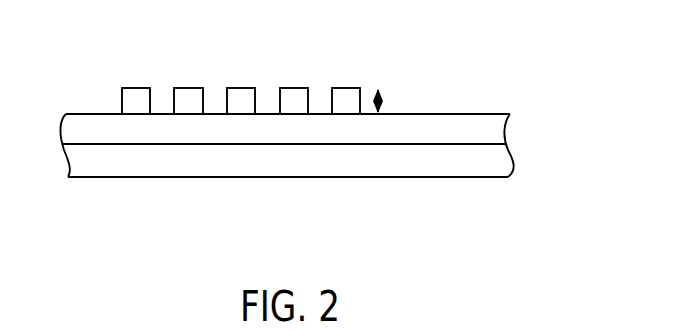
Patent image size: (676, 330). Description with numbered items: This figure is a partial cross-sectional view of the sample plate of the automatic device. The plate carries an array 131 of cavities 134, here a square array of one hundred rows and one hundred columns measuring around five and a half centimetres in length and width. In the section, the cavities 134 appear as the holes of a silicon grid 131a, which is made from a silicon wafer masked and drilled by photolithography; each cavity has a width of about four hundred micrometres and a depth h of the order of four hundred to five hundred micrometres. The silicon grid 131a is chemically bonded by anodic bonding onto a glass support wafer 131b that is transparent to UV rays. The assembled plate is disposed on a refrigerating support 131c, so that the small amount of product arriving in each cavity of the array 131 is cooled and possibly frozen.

The array 131 is at (408, 74).
The silicon grid 131a is at (128, 101).
The glass support wafer 131b is at (148, 137).
The refrigerating support 131c is at (450, 167).
The cavities 134 is at (168, 85).
The depth h is at (383, 101).